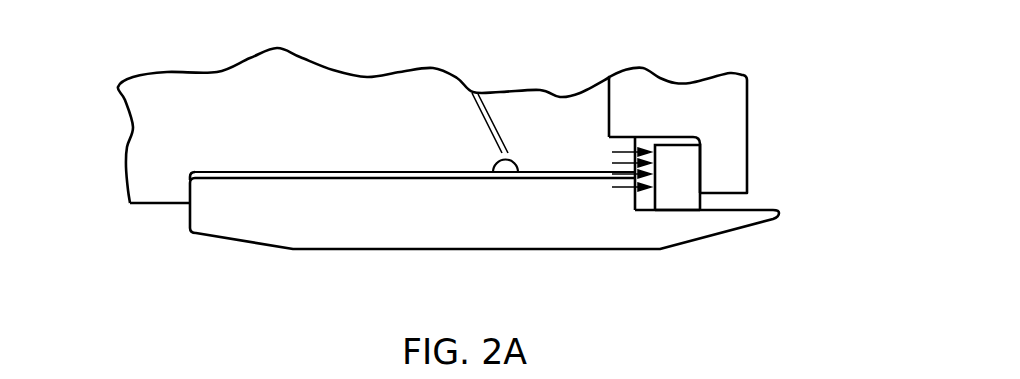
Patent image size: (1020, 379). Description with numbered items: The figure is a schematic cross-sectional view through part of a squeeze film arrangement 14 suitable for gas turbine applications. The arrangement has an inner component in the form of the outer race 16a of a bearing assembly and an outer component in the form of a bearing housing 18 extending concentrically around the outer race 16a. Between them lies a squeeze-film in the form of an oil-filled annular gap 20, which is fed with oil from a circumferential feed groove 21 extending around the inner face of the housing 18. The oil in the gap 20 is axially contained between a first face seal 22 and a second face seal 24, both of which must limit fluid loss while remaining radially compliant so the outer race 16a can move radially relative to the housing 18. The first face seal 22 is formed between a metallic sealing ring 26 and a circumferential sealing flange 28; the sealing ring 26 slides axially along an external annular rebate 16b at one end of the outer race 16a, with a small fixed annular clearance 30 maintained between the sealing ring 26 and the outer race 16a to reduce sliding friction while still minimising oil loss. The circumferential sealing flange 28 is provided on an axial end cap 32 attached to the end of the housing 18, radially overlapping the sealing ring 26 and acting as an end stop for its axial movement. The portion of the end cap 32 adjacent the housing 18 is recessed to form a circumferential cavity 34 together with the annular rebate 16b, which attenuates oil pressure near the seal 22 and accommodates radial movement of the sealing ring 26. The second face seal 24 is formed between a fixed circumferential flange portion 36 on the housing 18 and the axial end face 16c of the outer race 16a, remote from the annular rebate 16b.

The squeeze film arrangement 14 is at (318, 178).
The outer race 16a is at (208, 217).
The annular rebate 16b is at (768, 200).
The axial end face 16c is at (197, 235).
The bearing housing 18 is at (183, 93).
The annular gap 20 is at (407, 172).
The circumferential feed groove 21 is at (505, 152).
The first face seal 22 is at (677, 177).
The second face seal 24 is at (188, 180).
The sealing ring 26 is at (702, 175).
The circumferential sealing flange 28 is at (728, 182).
The annular clearance 30 is at (680, 212).
The axial end cap 32 is at (658, 88).
The circumferential cavity 34 is at (647, 200).
The fixed circumferential flange portion 36 is at (152, 185).